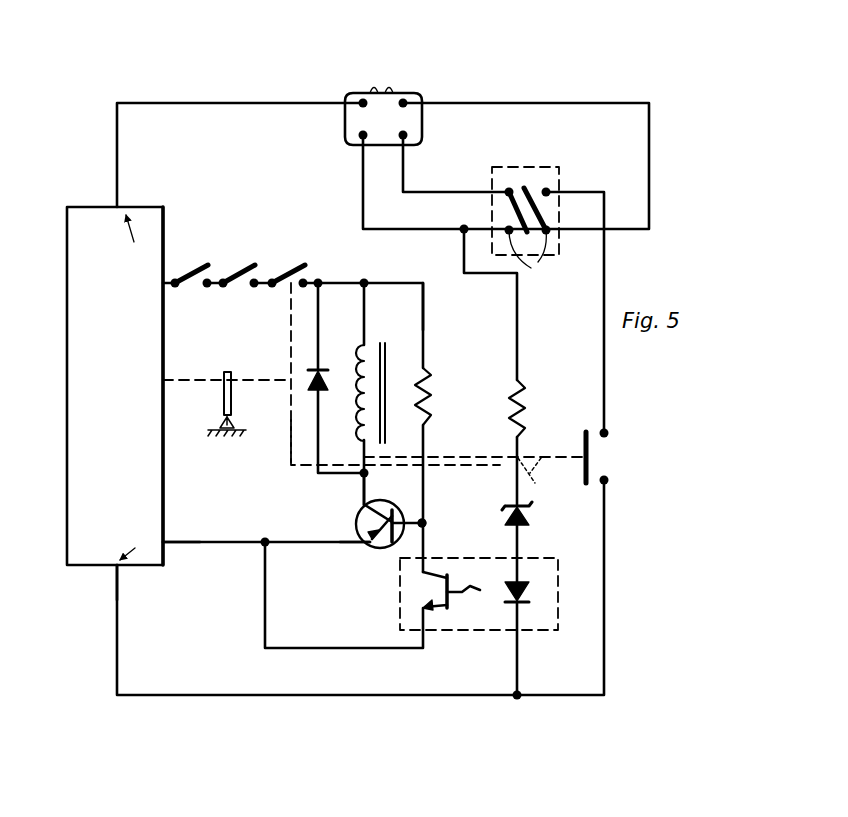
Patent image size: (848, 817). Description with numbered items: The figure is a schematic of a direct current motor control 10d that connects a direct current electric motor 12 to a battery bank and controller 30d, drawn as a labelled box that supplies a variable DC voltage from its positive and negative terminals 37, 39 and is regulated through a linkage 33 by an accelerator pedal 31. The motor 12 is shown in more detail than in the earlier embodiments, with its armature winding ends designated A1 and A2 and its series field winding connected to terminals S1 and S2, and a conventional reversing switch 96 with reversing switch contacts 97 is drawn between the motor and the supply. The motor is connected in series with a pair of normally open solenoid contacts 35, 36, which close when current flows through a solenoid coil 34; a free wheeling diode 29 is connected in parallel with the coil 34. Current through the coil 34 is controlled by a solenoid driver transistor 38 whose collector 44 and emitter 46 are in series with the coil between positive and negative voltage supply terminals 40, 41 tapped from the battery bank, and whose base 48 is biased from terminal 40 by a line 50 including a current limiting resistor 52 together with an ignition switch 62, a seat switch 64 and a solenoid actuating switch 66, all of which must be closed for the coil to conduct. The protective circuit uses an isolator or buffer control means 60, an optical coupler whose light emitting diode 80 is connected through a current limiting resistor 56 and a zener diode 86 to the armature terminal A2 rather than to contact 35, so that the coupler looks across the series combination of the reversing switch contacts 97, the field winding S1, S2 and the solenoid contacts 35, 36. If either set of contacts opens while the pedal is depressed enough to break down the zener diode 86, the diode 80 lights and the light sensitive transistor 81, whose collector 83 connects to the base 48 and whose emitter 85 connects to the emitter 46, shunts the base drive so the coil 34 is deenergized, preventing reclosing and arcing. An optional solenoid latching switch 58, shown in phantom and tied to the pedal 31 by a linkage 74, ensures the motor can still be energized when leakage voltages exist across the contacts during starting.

The direct current motor control 10d is at (583, 70).
The direct current electric motor 12 is at (385, 92).
The armature winding end A1 is at (363, 95).
The reversing switch end of the motor armature winding A2 is at (356, 140).
The series field winding terminal S1 is at (410, 98).
The series field winding terminal S2 is at (410, 138).
The reversing switch 96 is at (536, 163).
The reversing switch contacts 97 is at (505, 188).
The positive terminal 37 is at (110, 206).
The negative terminal 39 is at (118, 568).
The negative voltage supply terminal 41 is at (167, 545).
The positive voltage supply terminal 40 is at (178, 276).
The ignition switch 62 is at (205, 288).
The seat switch 64 is at (232, 276).
The solenoid actuating switch 66 is at (298, 272).
The linkage 33 is at (190, 378).
The accelerator pedal 31 is at (222, 402).
The free wheeling diode 29 is at (306, 386).
The solenoid coil 34 is at (360, 350).
The line 50 is at (424, 297).
The current limiting resistor 52 is at (430, 386).
The current limiting resistor 56 is at (510, 428).
The solenoid latching switch 58 is at (556, 460).
The solenoid contact 35 is at (607, 433).
The solenoid contact 36 is at (607, 480).
The battery bank and controller 30d is at (168, 490).
The linkage 74 is at (290, 472).
The solenoid driver transistor 38 is at (380, 556).
The collector 44 is at (365, 503).
The emitter 46 is at (362, 542).
The base 48 is at (405, 512).
The isolator or buffer control means 60 is at (482, 632).
The light sensitive transistor 81 is at (447, 615).
The collector 83 is at (425, 566).
The emitter 85 is at (428, 603).
The zener diode 86 is at (528, 512).
The light emitting diode 80 is at (530, 590).